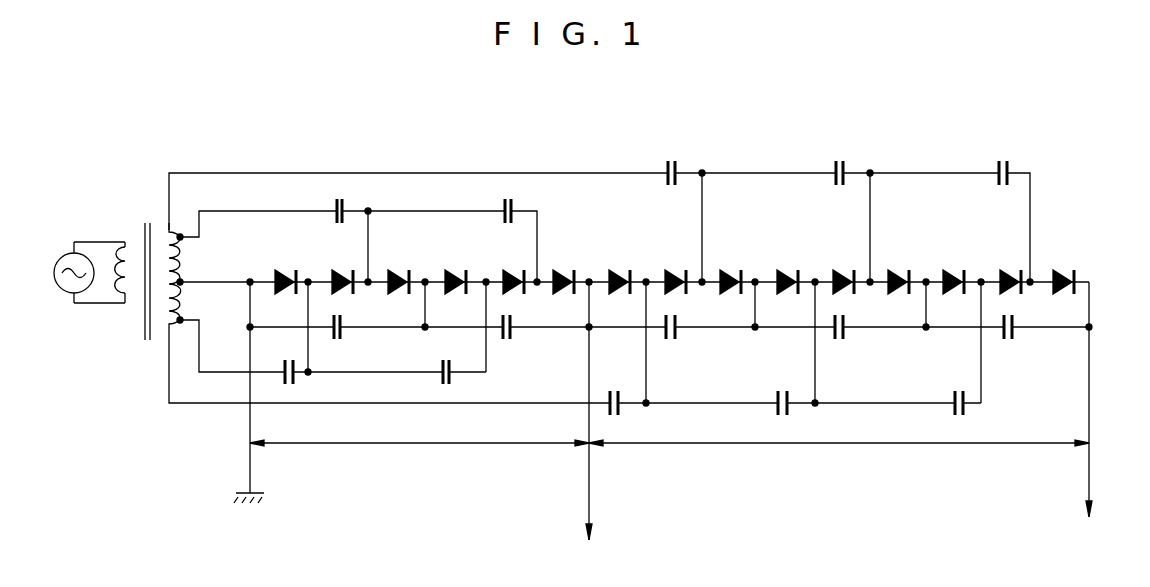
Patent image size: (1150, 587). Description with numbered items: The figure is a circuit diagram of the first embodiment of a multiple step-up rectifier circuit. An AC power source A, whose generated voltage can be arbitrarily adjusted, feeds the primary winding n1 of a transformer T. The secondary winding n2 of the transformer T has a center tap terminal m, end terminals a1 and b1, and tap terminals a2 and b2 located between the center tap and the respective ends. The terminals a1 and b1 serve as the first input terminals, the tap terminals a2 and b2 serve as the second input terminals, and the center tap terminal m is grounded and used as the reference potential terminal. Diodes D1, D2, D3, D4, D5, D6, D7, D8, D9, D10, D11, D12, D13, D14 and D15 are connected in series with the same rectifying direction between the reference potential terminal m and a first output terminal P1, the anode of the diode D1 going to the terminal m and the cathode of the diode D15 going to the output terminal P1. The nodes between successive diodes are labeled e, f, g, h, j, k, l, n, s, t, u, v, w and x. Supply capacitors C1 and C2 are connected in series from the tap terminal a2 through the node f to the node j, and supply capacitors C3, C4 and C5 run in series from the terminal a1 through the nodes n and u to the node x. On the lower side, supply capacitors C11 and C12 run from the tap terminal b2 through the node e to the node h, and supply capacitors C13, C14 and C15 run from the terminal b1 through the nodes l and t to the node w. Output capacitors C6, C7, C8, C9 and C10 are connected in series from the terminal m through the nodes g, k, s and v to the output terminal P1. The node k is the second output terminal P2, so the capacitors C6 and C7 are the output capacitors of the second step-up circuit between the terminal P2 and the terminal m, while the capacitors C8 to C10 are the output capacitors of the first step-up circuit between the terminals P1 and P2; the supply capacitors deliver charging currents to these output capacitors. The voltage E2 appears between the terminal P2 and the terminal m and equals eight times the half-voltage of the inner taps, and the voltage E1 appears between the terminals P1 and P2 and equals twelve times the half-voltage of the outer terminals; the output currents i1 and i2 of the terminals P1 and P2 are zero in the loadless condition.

The transformer T is at (144, 223).
The AC power source A is at (75, 300).
The primary winding n1 is at (114, 303).
The secondary winding n2 is at (158, 332).
The terminal a1 is at (592, 216).
The tap terminal a2 is at (357, 233).
The terminal b1 is at (566, 380).
The tap terminal b2 is at (331, 356).
The center tap terminal m is at (250, 282).
The node e is at (308, 280).
The node f is at (367, 280).
The node g is at (425, 282).
The node h is at (486, 280).
The node j is at (537, 284).
The node k is at (588, 280).
The node l is at (645, 281).
The node n is at (701, 282).
The node s is at (755, 281).
The node t is at (815, 280).
The node u is at (869, 281).
The node v is at (926, 280).
The node w is at (981, 280).
The node x is at (1029, 281).
The diode D1 is at (282, 268).
The diode D2 is at (334, 268).
The diode D3 is at (400, 268).
The diode D4 is at (456, 268).
The diode D5 is at (512, 268).
The diode D6 is at (560, 268).
The diode D7 is at (616, 268).
The diode D8 is at (672, 268).
The diode D9 is at (728, 268).
The diode D10 is at (784, 268).
The diode D11 is at (841, 268).
The diode D12 is at (896, 268).
The diode D13 is at (951, 268).
The diode D14 is at (1008, 268).
The diode D15 is at (1062, 268).
The capacitor C1 is at (333, 202).
The capacitor C2 is at (502, 204).
The capacitor C3 is at (664, 166).
The capacitor C4 is at (832, 166).
The capacitor C5 is at (995, 166).
The capacitor C6 is at (344, 332).
The capacitor C7 is at (513, 332).
The capacitor C8 is at (678, 332).
The capacitor C9 is at (846, 332).
The capacitor C10 is at (1015, 332).
The capacitor C11 is at (296, 377).
The capacitor C12 is at (452, 377).
The capacitor C13 is at (618, 390).
The capacitor C14 is at (778, 390).
The capacitor C15 is at (958, 388).
The first output terminal P1 is at (1091, 328).
The second output terminal P2 is at (588, 330).
The output voltage E1 is at (839, 432).
The output voltage E2 is at (419, 432).
The output current i1 is at (1091, 498).
The output current i2 is at (587, 504).